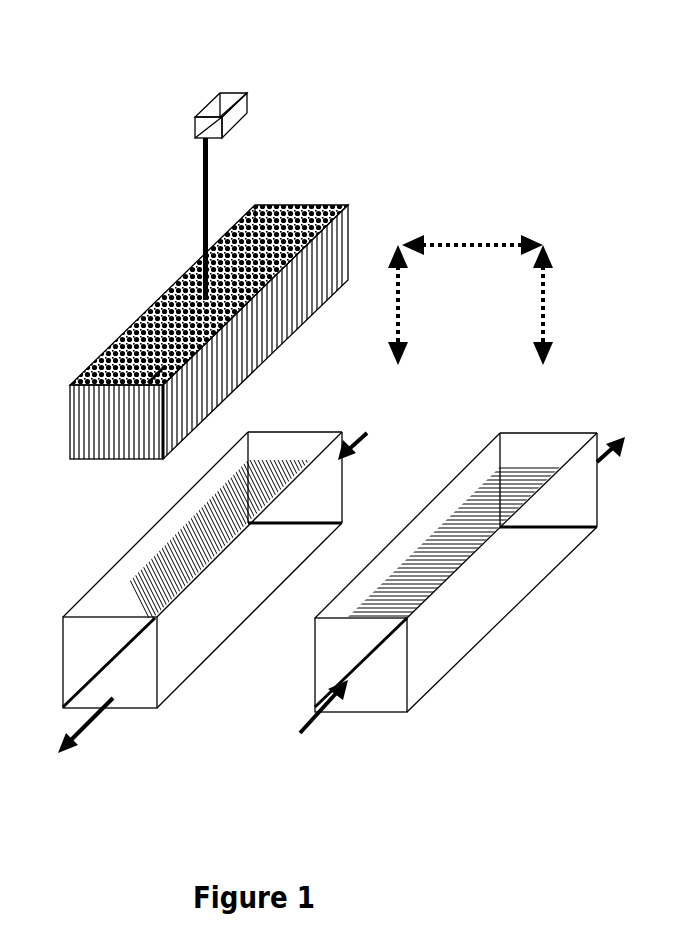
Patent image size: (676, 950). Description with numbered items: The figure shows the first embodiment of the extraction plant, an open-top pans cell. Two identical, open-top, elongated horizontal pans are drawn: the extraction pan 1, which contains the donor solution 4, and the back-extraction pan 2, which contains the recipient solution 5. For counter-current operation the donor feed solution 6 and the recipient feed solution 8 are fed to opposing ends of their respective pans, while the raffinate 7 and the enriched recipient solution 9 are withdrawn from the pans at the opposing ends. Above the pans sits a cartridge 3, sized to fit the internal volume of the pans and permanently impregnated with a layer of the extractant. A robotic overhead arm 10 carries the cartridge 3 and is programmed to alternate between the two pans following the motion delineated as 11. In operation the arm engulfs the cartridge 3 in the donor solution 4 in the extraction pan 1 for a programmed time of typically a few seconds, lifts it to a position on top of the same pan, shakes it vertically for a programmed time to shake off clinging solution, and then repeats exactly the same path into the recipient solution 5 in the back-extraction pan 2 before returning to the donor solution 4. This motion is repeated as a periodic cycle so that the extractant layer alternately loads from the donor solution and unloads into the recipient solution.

The extraction pan 1 is at (229, 570).
The back-extraction pan 2 is at (456, 572).
The cartridge 3 is at (209, 330).
The donor solution 4 is at (229, 530).
The recipient solution 5 is at (455, 542).
The donor feed solution 6 is at (324, 720).
The raffinate 7 is at (619, 461).
The recipient feed solution 8 is at (361, 456).
The enriched recipient solution 9 is at (87, 732).
The robotic overhead arm 10 is at (256, 99).
The robot arm motion 11 is at (470, 300).